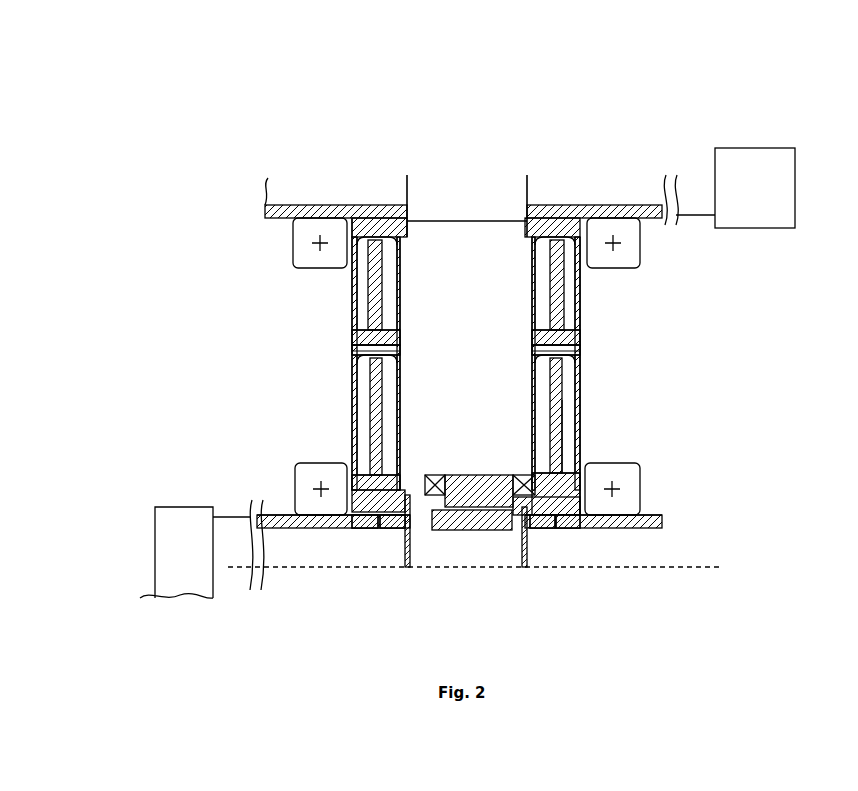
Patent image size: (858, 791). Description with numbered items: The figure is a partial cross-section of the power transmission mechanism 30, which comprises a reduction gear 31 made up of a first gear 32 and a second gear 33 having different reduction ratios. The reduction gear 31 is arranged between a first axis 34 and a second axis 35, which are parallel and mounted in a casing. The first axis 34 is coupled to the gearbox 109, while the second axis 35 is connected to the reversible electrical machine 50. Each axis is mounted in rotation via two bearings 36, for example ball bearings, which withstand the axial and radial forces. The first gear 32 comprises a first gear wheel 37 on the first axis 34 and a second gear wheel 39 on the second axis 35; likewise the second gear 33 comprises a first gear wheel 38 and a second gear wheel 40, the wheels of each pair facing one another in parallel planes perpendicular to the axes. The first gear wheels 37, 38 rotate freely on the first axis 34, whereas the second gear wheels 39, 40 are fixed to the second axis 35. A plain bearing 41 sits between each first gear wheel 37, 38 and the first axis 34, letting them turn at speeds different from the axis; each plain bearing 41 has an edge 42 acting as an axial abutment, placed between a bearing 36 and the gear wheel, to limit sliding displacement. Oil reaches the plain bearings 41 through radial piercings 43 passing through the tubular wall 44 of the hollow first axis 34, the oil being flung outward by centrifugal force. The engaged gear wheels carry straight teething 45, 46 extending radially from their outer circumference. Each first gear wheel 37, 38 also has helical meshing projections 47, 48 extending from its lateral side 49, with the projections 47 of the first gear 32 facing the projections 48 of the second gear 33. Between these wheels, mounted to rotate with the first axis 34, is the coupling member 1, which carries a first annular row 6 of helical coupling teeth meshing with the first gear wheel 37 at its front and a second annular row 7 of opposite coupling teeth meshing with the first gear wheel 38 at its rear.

The coupling member 1 is at (492, 530).
The first annular row of coupling teeth 6 is at (433, 480).
The second annular row of coupling teeth 7 is at (508, 475).
The power transmission mechanism 30 is at (238, 182).
The reduction gear 31 is at (698, 332).
The first gear 32 is at (352, 290).
The second gear 33 is at (587, 410).
The first axis 34 is at (285, 525).
The second axis 35 is at (613, 197).
The bearing 36 is at (300, 238).
The first gear wheel of the first gear 37 is at (385, 395).
The first gear wheel of the second gear 38 is at (540, 398).
The second gear wheel of the first gear 39 is at (393, 312).
The second gear wheel of the second gear 40 is at (535, 298).
The plain bearing 41 is at (395, 530).
The edge 42 is at (348, 530).
The radial piercing 43 is at (372, 528).
The tubular wall 44 is at (662, 520).
The straight teething 45 is at (352, 350).
The straight teething 46 is at (583, 343).
The meshing projection 47 is at (408, 470).
The meshing projection 48 is at (552, 470).
The lateral side 49 is at (542, 428).
The reversible electrical machine 50 is at (767, 170).
The gearbox 109 is at (180, 525).